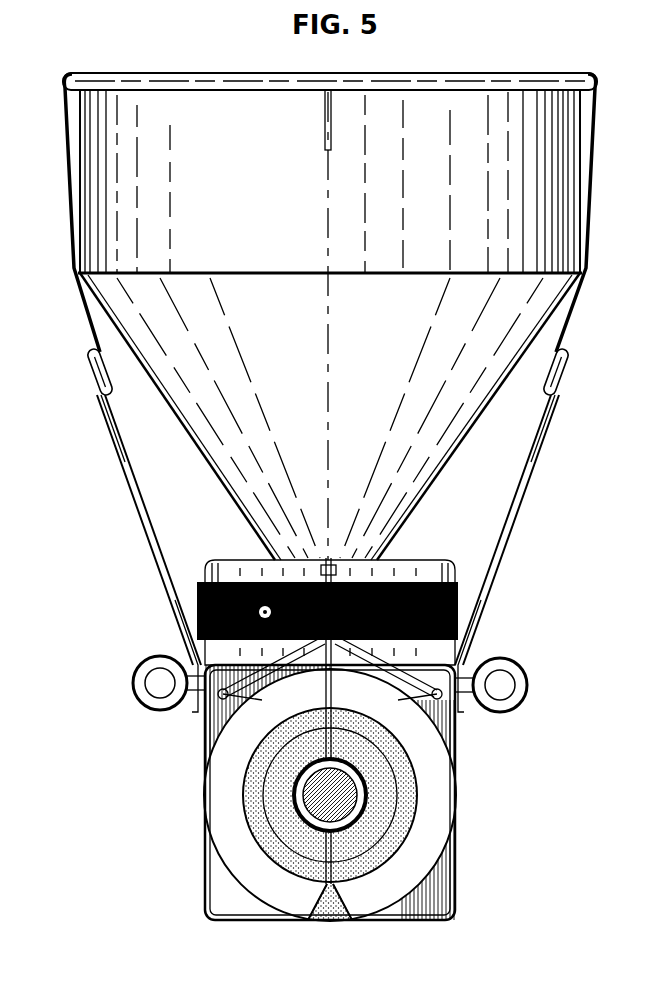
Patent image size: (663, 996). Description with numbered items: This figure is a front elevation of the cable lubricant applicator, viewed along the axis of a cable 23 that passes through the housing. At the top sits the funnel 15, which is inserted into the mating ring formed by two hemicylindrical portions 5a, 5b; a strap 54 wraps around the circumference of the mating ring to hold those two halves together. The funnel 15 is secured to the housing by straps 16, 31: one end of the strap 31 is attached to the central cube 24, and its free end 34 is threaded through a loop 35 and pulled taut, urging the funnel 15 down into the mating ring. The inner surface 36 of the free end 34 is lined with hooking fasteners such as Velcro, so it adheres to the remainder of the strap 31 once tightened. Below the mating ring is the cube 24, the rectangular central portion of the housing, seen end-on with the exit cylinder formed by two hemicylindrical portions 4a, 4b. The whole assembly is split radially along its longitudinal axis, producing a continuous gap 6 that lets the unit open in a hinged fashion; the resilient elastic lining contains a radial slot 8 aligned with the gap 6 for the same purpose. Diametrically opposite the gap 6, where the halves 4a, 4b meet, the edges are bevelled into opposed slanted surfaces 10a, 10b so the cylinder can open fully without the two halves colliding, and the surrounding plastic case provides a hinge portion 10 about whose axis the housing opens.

The funnel 15 is at (527, 57).
The strap 16 is at (78, 319).
The loop 35 is at (100, 388).
The inner surface 36 is at (170, 438).
The strap 31 is at (148, 524).
The free end 34 is at (176, 612).
The hemicylindrical portion 5b is at (224, 537).
The hemicylindrical portion 5a is at (411, 560).
The gap 6 is at (326, 565).
The strap 54 is at (460, 616).
The radial slot 8 is at (358, 730).
The cable 23 is at (340, 797).
The cube 24 is at (456, 893).
The hemicylindrical portion 4b is at (270, 890).
The hemicylindrical portion 4a is at (365, 888).
The hinge portion 10 is at (327, 923).
The slanted surface 10b is at (320, 922).
The slanted surface 10a is at (338, 922).